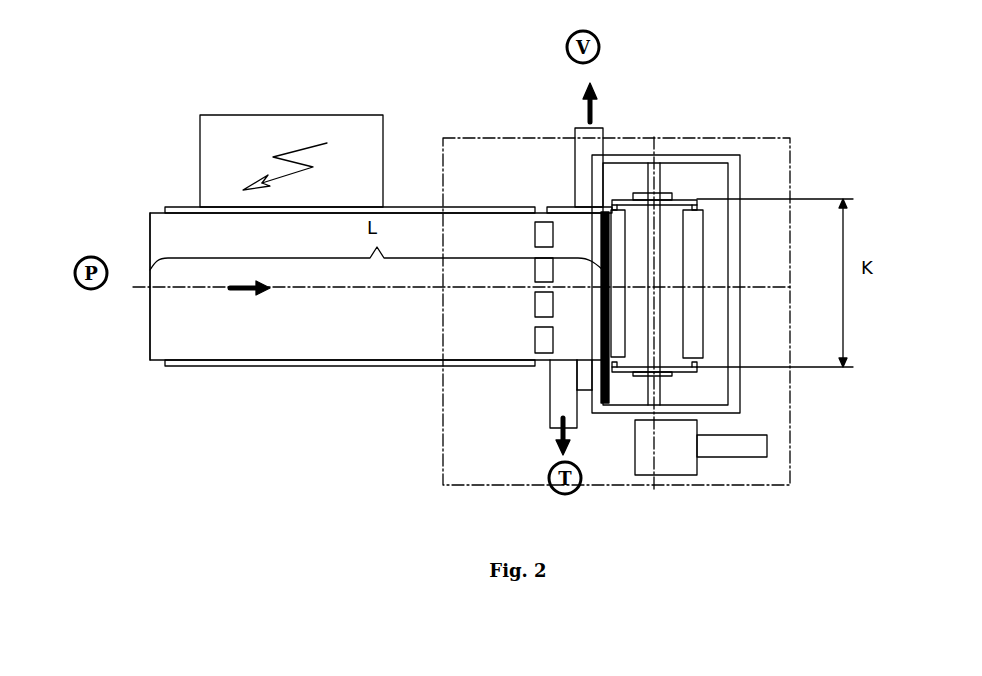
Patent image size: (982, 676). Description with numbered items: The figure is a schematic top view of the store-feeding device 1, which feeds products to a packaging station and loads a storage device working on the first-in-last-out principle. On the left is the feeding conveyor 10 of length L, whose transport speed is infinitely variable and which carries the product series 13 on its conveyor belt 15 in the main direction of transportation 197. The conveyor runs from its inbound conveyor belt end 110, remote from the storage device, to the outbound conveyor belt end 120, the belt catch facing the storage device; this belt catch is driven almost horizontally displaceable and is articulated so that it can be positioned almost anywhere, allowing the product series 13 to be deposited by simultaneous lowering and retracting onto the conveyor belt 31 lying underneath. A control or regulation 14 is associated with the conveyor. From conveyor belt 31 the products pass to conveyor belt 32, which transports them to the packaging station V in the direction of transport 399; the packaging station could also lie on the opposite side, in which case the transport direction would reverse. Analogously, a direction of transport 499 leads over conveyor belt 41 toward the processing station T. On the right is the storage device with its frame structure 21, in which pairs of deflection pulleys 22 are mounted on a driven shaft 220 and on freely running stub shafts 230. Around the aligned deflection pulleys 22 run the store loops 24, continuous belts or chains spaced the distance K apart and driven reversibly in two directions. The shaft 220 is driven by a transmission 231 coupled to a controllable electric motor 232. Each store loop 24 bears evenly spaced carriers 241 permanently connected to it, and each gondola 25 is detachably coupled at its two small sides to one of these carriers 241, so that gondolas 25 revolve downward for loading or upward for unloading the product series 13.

The store-feeding device 1 is at (420, 115).
The feeding conveyor 10 is at (330, 368).
The inbound conveyor belt end 110 is at (150, 270).
The control or regulation 14 is at (207, 167).
The conveyor belt 15 is at (185, 323).
The main direction of transportation 197 is at (253, 293).
The product series 13 is at (543, 270).
The outbound conveyor belt end 120 is at (600, 248).
The conveyor belt 32 is at (583, 145).
The direction of transport 399 is at (592, 92).
The conveyor belt 41 is at (555, 380).
The conveyor belt 31 is at (590, 387).
The direction of transport 499 is at (560, 447).
The frame structure 21 is at (737, 210).
The gondola 25 is at (743, 300).
The stub shaft 230 is at (653, 262).
The shaft 220 is at (658, 181).
The deflection pulley 22 is at (695, 208).
The carrier 241 is at (700, 204).
The store loop 24 is at (615, 190).
The transmission 231 is at (672, 458).
The motor 232 is at (750, 443).